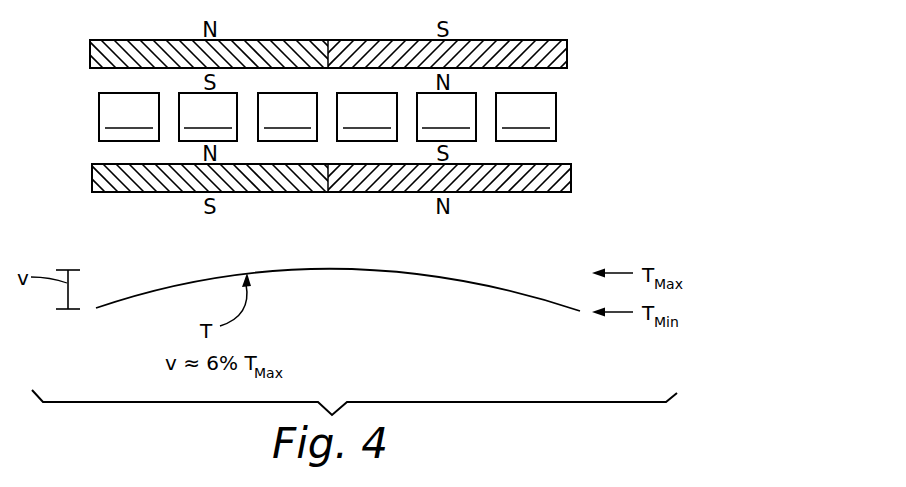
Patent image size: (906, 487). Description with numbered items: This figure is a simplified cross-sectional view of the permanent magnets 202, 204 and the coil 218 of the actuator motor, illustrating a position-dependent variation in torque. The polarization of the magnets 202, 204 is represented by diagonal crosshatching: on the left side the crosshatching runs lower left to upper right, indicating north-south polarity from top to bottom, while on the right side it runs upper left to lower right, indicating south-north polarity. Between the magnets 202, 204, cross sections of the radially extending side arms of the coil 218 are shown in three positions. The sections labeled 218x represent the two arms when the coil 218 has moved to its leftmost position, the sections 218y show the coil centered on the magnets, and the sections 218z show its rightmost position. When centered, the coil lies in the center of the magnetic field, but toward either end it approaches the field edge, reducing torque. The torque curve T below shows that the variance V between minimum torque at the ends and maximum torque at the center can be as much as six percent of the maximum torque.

The permanent magnet 202 is at (576, 58).
The permanent magnet 204 is at (582, 179).
The coil 218 is at (389, 117).
The coil sections 218x is at (248, 117).
The coil sections 218y is at (327, 117).
The coil sections 218z is at (407, 117).